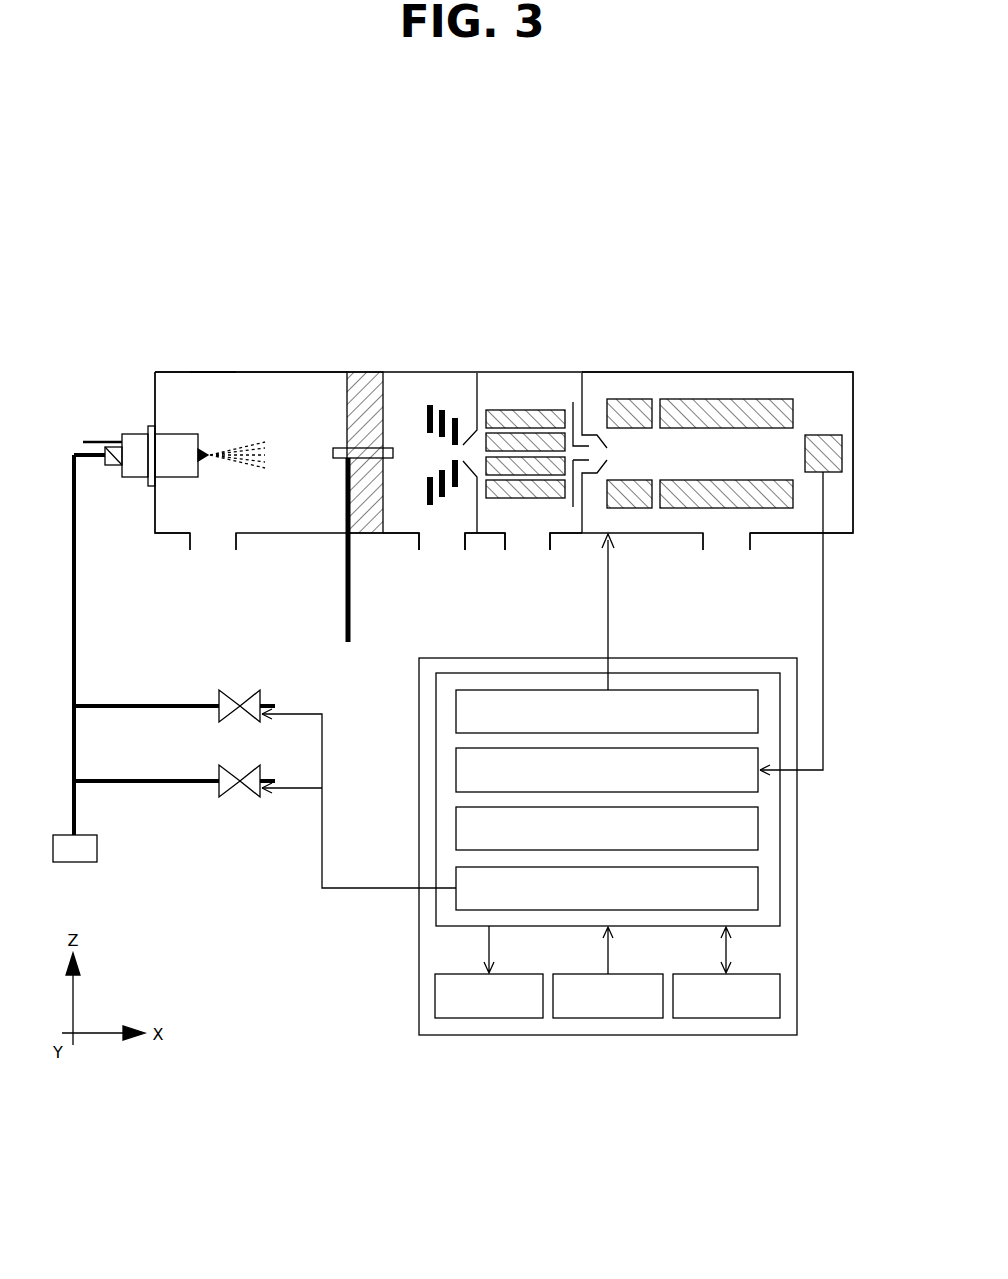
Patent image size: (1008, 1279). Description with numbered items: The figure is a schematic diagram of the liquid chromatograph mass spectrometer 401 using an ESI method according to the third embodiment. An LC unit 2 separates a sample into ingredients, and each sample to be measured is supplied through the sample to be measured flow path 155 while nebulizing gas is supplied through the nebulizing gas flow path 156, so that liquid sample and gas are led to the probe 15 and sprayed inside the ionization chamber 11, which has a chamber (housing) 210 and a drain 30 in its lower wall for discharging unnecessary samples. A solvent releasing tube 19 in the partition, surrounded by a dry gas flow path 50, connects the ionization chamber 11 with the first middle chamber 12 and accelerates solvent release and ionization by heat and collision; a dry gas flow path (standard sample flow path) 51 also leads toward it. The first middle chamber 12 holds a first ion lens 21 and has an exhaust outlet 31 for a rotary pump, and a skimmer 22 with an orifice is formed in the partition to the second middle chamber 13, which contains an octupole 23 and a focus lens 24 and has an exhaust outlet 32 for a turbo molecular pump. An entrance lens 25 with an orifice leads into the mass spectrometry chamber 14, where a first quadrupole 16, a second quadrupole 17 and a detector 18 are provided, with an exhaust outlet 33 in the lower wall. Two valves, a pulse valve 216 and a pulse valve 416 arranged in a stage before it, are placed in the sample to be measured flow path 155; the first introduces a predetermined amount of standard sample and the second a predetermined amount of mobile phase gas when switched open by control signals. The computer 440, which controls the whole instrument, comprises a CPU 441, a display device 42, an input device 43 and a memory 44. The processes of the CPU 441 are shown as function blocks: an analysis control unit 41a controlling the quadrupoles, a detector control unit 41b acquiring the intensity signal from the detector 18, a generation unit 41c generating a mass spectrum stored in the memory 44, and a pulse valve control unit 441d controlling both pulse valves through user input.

The liquid chromatograph mass spectrometer 401 is at (487, 180).
The ionization chamber 11 is at (271, 385).
The chamber (housing) 210 is at (207, 372).
The probe 15 is at (133, 433).
The nebulizing gas flow path 156 is at (110, 440).
The sample to be measured flow path 155 is at (80, 580).
The drain 30 is at (210, 545).
The dry gas flow path 50 is at (334, 447).
The dry gas flow path (standard sample flow path) 51 is at (345, 582).
The solvent releasing tube 19 is at (365, 440).
The first middle chamber 12 is at (405, 390).
The first ion lens 21 is at (440, 406).
The skimmer 22 is at (477, 388).
The octupole 23 is at (508, 408).
The focus lens 24 is at (572, 400).
The entrance lens 25 is at (582, 375).
The second middle chamber 13 is at (488, 520).
The exhaust outlet 31 is at (440, 545).
The exhaust outlet 32 is at (527, 545).
The exhaust outlet 33 is at (725, 545).
The mass spectrometry chamber 14 is at (777, 375).
The first quadrupole 16 is at (630, 398).
The second quadrupole 17 is at (722, 398).
The detector 18 is at (822, 434).
The computer 440 is at (418, 960).
The CPU 441 is at (665, 673).
The analysis control unit 41a is at (456, 712).
The detector control unit 41b is at (456, 772).
The generation unit 41c is at (758, 828).
The pulse valve control unit 441d is at (758, 888).
The display device 42 is at (490, 1018).
The input device 43 is at (608, 1018).
The memory 44 is at (726, 1018).
The pulse valve 216 is at (219, 700).
The pulse valve 416 is at (219, 775).
The LC unit 2 is at (97, 848).